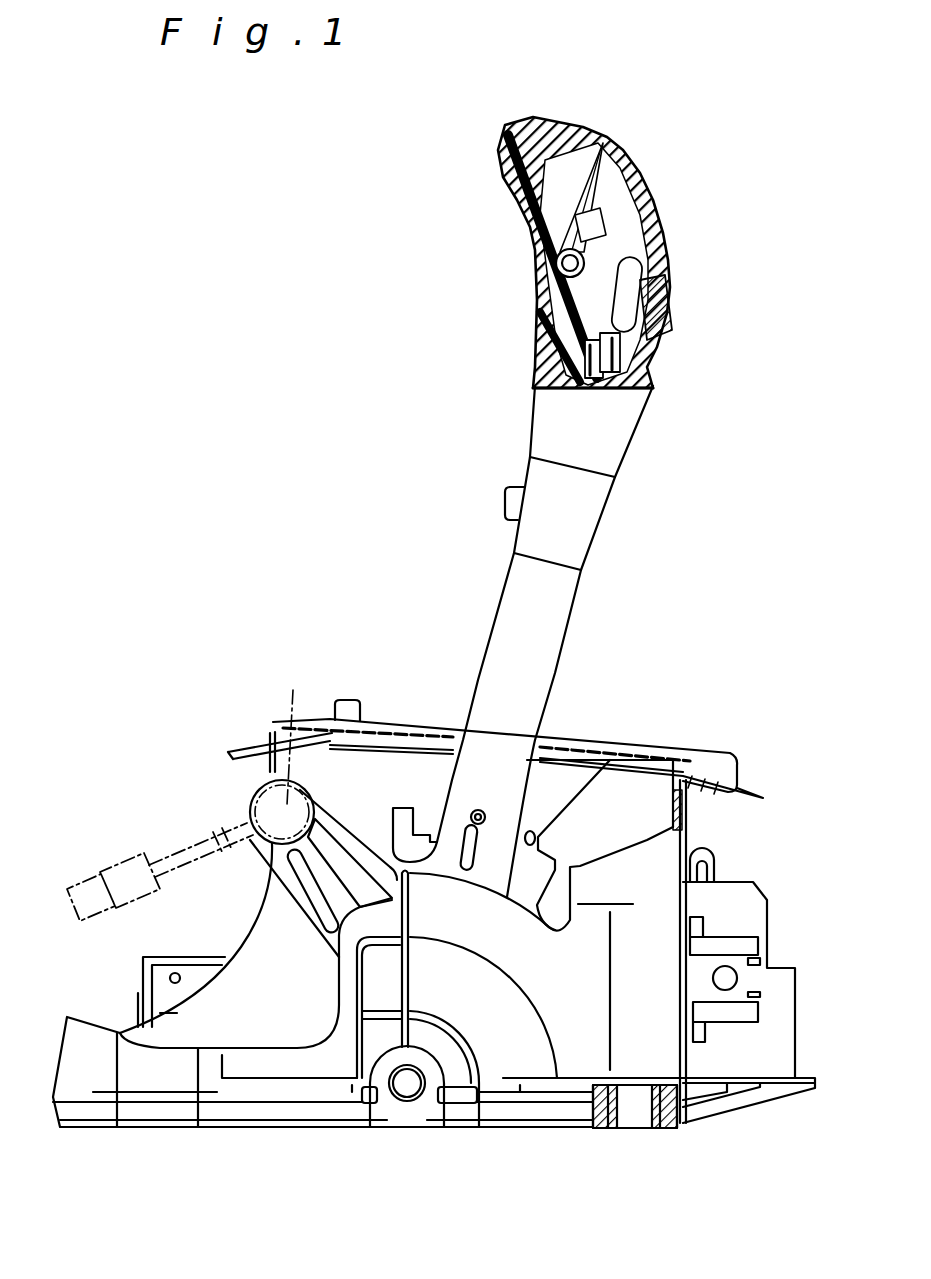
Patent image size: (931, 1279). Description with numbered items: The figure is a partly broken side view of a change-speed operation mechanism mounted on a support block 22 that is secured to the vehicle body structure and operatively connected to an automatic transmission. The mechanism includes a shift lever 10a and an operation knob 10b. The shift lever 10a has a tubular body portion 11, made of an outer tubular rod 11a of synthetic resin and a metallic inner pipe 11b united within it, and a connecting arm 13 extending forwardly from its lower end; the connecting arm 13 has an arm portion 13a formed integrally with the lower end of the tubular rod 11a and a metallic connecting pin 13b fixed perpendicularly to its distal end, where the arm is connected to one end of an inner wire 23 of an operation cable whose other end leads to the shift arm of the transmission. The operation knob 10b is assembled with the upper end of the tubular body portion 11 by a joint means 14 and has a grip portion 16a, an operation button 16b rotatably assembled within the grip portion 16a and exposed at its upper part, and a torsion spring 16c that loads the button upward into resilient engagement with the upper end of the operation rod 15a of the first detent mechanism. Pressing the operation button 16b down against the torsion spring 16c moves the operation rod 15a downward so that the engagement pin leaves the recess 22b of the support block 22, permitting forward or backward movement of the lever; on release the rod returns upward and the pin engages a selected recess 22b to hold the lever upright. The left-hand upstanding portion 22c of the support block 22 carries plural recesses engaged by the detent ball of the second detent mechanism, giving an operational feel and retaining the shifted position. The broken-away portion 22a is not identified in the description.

The shift lever 10a is at (568, 630).
The operation knob 10b is at (487, 147).
The tubular body portion 11 is at (493, 607).
The outer tubular rod 11a is at (543, 687).
The metallic inner pipe 11b is at (583, 357).
The connecting arm 13 is at (247, 797).
The arm portion 13a is at (290, 873).
The metallic connecting pin 13b is at (296, 752).
The joint means 14 is at (600, 492).
The operation rod 15a is at (623, 283).
The grip portion 16a is at (657, 327).
The operation button 16b is at (630, 173).
The torsion spring 16c is at (543, 223).
The support block 22 is at (117, 1033).
The cover bar 22a is at (640, 782).
The recess 22b is at (590, 780).
The left-hand upstanding portion 22c is at (665, 845).
The inner wire 23 is at (190, 847).